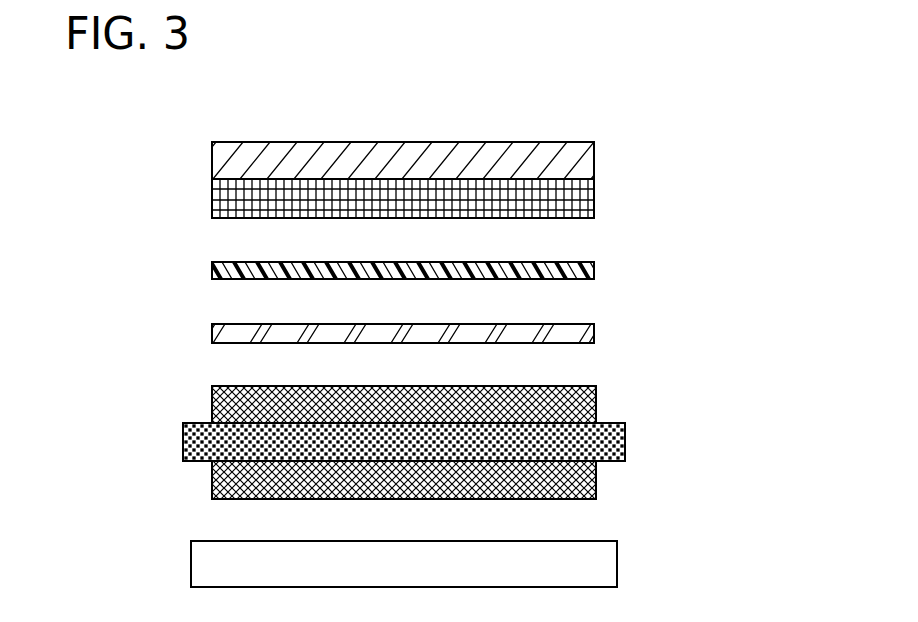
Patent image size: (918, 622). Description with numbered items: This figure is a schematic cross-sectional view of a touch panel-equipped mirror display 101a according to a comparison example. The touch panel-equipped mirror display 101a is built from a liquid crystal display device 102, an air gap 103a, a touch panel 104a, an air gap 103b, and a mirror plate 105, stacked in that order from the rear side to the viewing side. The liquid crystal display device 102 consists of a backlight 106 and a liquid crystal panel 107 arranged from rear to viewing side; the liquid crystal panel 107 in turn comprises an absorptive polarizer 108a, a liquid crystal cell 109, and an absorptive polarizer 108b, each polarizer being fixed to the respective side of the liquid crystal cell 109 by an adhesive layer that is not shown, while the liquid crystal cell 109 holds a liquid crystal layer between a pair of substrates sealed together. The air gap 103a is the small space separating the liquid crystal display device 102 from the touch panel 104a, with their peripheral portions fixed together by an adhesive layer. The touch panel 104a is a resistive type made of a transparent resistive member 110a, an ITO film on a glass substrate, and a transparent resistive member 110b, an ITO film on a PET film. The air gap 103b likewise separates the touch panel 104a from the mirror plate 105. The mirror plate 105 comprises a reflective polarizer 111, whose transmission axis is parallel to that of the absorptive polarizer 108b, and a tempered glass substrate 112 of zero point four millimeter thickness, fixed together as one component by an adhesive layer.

The touch panel-equipped mirror display 101a is at (188, 118).
The substrate 112 is at (583, 162).
The reflective polarizer 111 is at (583, 200).
The air gap 103b is at (583, 238).
The transparent resistive member 110b is at (583, 269).
The transparent resistive member 110a is at (583, 333).
The air gap 103a is at (583, 363).
The absorptive polarizer 108b is at (583, 402).
The liquid crystal cell 109 is at (617, 443).
The absorptive polarizer 108a is at (583, 481).
The backlight 106 is at (603, 563).
The mirror plate 105 is at (723, 142).
The touch panel 104a is at (723, 262).
The liquid crystal panel 107 is at (723, 385).
The liquid crystal display device 102 is at (790, 385).